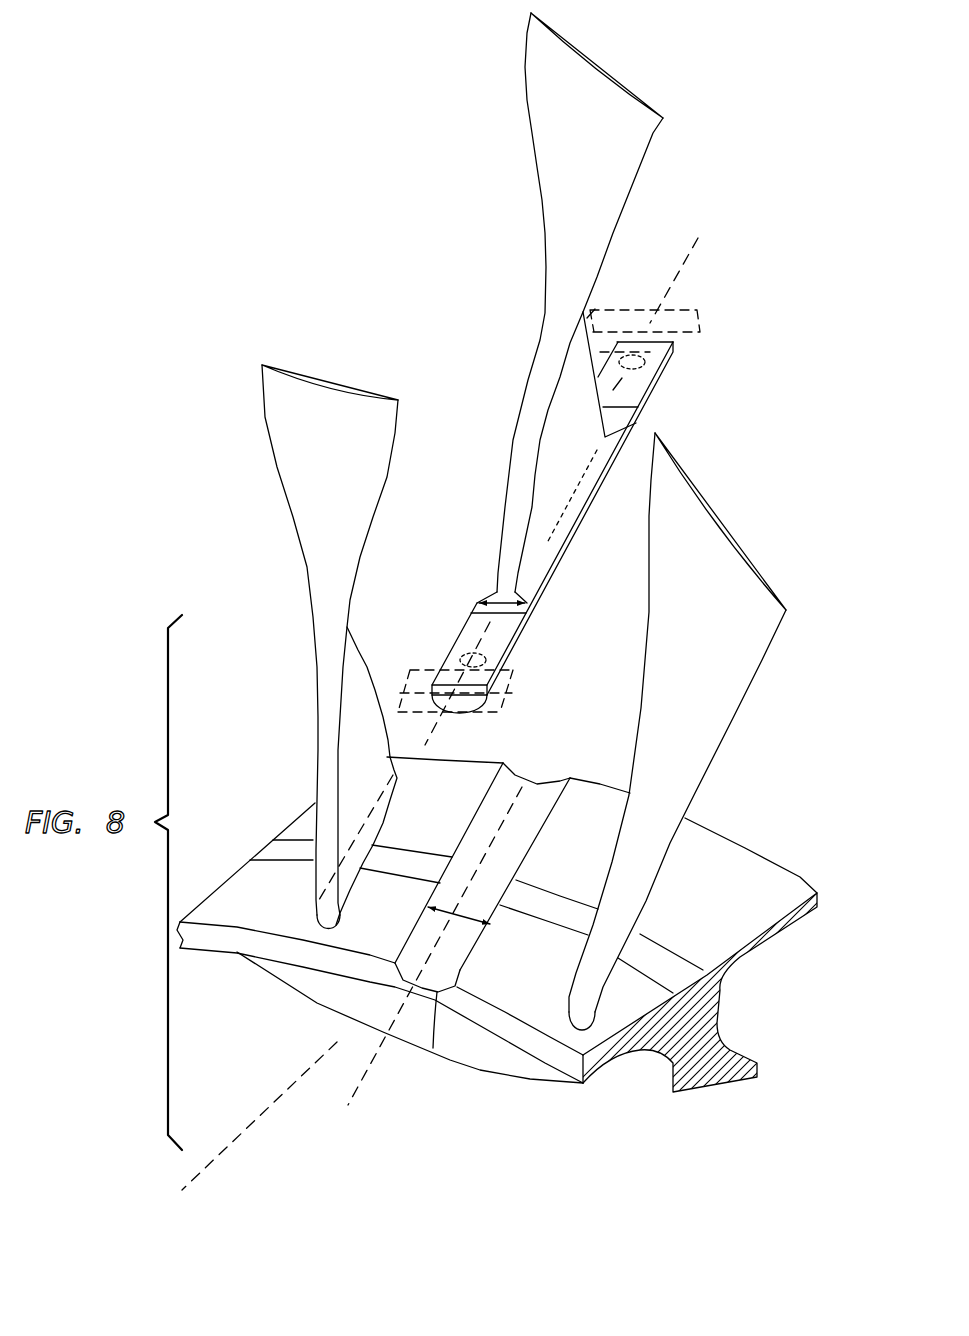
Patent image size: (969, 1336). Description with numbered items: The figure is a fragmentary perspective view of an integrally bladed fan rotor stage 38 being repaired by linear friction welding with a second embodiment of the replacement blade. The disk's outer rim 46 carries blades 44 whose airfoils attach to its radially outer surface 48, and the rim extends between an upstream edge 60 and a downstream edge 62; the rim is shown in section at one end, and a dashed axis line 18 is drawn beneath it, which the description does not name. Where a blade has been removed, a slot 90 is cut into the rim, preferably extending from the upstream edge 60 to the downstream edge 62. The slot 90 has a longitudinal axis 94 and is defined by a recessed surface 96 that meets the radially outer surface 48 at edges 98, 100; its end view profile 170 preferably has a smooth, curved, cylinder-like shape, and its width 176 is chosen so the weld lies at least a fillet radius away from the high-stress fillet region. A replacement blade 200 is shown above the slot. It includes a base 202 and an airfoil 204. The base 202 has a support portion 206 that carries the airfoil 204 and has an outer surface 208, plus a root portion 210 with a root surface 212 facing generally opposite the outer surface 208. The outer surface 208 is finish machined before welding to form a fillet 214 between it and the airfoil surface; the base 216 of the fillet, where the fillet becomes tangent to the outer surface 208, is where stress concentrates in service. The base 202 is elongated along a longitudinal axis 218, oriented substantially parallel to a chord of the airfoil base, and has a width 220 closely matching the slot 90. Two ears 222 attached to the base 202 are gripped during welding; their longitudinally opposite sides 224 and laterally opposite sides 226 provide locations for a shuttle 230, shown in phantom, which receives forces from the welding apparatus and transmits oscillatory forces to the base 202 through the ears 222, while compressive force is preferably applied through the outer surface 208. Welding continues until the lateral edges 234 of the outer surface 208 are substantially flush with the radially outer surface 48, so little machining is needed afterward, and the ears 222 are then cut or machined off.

The engine axis 18 is at (248, 1123).
The integrally bladed fan rotor stage 38 is at (600, 399).
The blades 44 is at (356, 372).
The outer rim 46 is at (573, 947).
The radially outer surface 48 is at (498, 906).
The upstream edge 60 is at (572, 1063).
The downstream edge 62 is at (818, 893).
The slot 90 is at (563, 771).
The longitudinal axis 94 is at (353, 1093).
The recessed surface 96 is at (436, 963).
The edge 98 is at (493, 932).
The edge 100 is at (418, 920).
The end view profile 170 is at (433, 1048).
The width 176 is at (473, 917).
The replacement blade 200 is at (565, 313).
The base 202 is at (477, 531).
The airfoil 204 is at (529, 150).
The support portion 206 is at (490, 575).
The outer surface 208 is at (492, 573).
The root portion 210 is at (570, 493).
The root surface 212 is at (557, 572).
The fillet 214 is at (607, 437).
The base of the fillet 216 is at (590, 462).
The longitudinal axis 218 is at (688, 258).
The width 220 is at (482, 573).
The ears 222 is at (470, 633).
The longitudinally opposite sides 224 is at (460, 714).
The laterally opposite sides 226 is at (453, 653).
The shuttle 230 is at (483, 650).
The lateral edges 234 is at (492, 572).